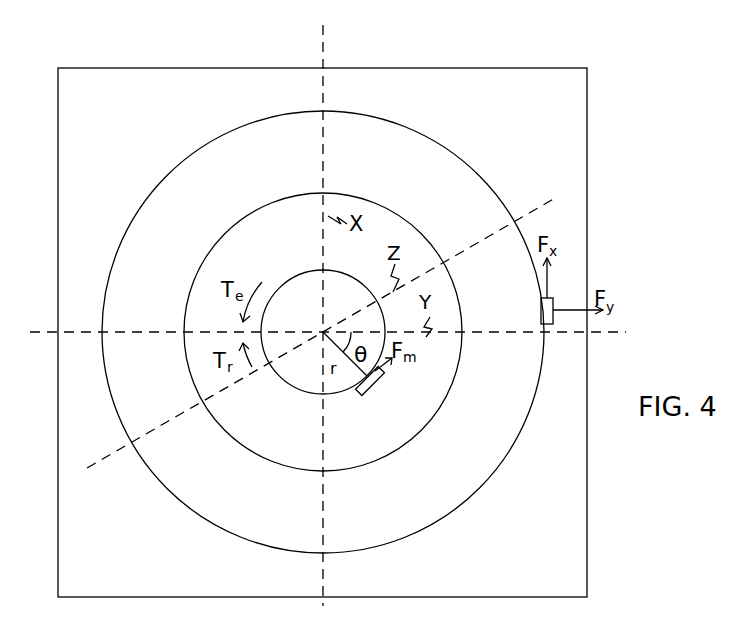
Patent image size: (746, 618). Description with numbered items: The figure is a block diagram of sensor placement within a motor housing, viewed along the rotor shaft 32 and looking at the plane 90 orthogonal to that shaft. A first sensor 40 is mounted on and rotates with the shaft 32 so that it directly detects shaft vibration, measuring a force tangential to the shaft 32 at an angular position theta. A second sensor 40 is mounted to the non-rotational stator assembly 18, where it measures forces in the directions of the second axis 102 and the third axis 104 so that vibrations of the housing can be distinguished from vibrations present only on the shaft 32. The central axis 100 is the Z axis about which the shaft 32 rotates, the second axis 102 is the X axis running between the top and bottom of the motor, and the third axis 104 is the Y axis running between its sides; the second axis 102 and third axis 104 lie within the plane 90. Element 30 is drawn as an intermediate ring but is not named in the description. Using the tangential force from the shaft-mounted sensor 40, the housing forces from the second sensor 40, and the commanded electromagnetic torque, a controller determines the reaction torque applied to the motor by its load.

The stator assembly 18 is at (178, 163).
The rotor 30 is at (262, 210).
The shaft 32 is at (295, 274).
The sensor 40 is at (380, 382).
The plane 90 is at (587, 118).
The central axis 100 is at (530, 214).
The second axis 102 is at (328, 46).
The third axis 104 is at (622, 332).